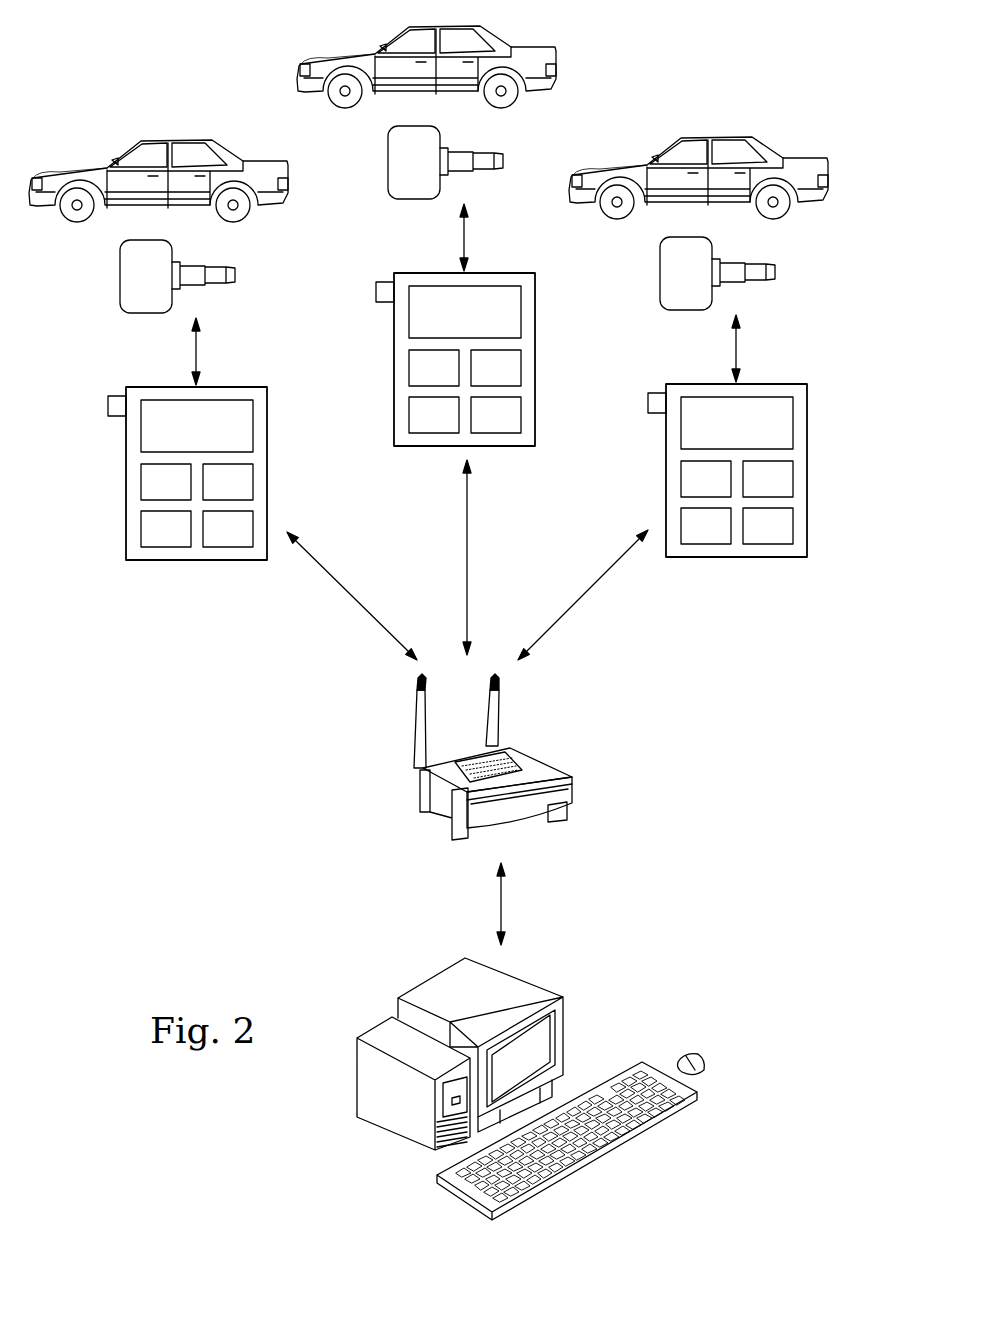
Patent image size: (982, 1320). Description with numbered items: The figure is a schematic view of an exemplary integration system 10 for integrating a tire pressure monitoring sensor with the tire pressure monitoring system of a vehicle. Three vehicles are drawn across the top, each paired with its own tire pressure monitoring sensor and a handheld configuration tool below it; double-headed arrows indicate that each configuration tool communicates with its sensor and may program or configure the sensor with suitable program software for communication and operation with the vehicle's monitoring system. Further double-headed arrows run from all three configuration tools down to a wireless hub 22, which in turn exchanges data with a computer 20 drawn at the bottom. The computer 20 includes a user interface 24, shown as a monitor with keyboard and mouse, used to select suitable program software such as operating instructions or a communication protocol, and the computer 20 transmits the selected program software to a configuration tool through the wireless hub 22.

The integration system 10 is at (145, 904).
The computer 20 is at (588, 983).
The wireless hub 22 is at (572, 789).
The user interface 24 is at (545, 1037).